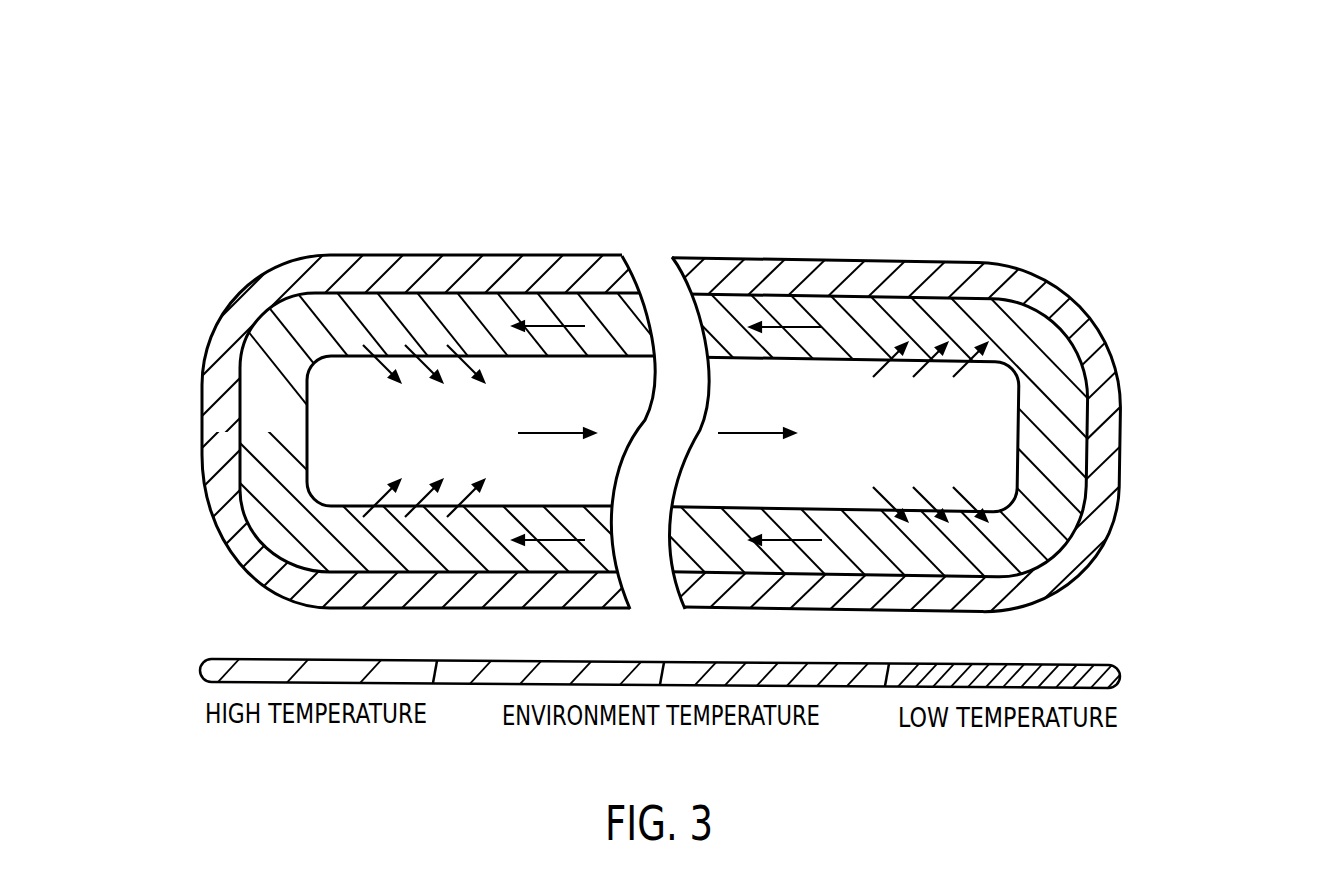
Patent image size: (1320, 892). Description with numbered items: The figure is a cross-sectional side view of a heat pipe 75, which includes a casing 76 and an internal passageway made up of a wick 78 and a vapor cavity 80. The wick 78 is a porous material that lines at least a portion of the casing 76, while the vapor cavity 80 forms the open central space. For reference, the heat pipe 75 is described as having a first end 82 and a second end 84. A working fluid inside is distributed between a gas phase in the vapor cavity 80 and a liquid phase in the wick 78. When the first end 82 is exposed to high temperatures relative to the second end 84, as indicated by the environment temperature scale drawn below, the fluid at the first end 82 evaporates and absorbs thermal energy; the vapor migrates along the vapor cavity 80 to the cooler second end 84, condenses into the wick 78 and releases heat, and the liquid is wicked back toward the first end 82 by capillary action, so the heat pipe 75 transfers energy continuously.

The heat pipe 75 is at (489, 103).
The casing 76 is at (828, 277).
The wick 78 is at (945, 318).
The vapor cavity 80 is at (973, 445).
The first end 82 is at (163, 484).
The second end 84 is at (1157, 503).